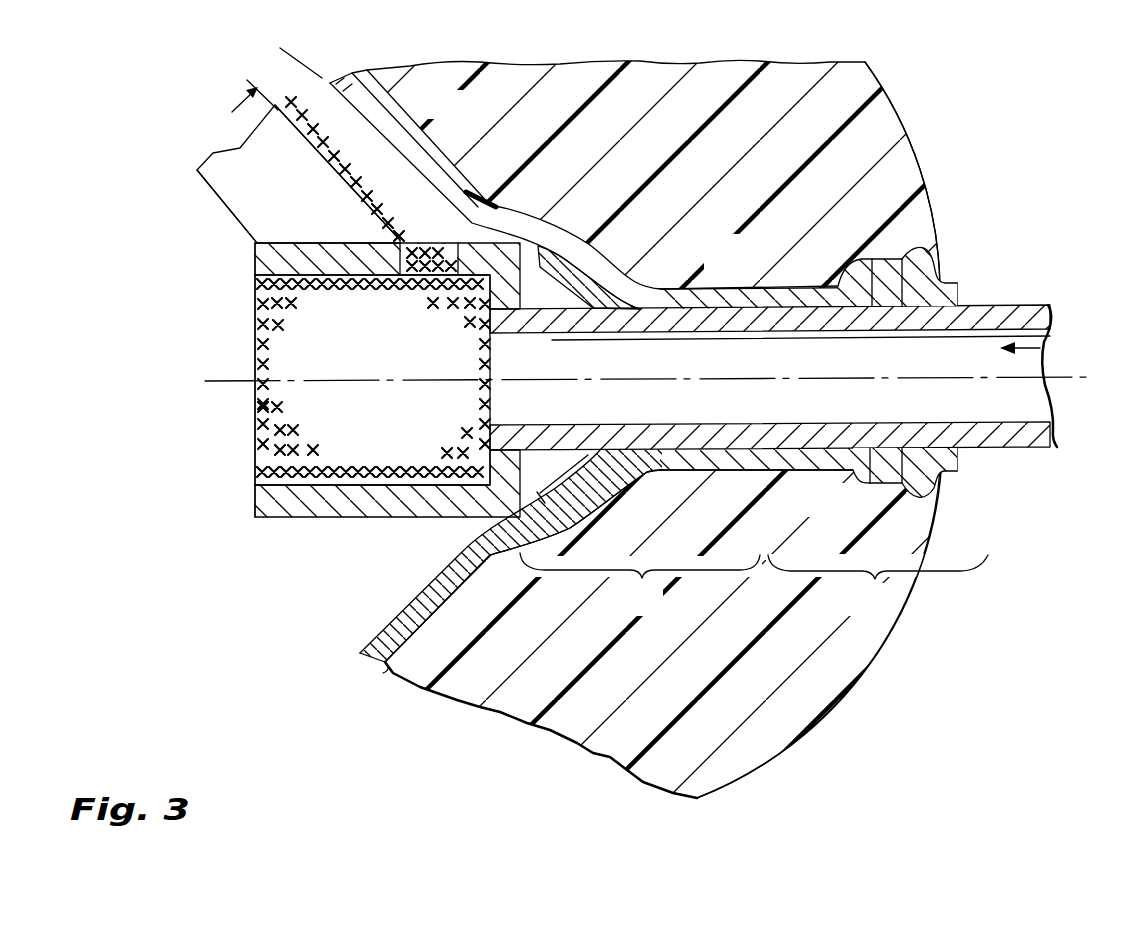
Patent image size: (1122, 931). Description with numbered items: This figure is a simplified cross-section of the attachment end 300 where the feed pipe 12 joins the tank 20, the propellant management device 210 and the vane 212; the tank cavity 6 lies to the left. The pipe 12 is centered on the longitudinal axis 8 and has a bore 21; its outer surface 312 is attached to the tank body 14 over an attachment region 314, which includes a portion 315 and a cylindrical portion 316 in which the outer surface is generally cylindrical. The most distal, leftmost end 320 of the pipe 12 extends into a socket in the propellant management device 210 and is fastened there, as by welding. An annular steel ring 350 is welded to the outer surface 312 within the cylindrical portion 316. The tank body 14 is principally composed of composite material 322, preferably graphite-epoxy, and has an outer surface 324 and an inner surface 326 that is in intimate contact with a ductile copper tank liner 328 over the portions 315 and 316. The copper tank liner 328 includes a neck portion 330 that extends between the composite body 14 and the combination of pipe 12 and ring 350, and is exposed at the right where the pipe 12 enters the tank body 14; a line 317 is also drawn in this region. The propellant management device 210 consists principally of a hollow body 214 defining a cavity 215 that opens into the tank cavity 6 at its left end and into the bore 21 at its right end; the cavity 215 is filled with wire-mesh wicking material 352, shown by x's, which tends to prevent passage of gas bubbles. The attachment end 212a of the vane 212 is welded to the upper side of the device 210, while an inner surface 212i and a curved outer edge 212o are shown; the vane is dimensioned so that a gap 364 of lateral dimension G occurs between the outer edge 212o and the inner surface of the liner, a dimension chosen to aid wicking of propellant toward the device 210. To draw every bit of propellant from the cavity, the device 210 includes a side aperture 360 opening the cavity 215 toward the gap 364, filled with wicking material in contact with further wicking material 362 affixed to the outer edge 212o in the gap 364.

The tank cavity 6 is at (250, 584).
The longitudinal axis 8 is at (1074, 378).
The pipe 12 is at (1056, 450).
The tank body 14 is at (897, 118).
The tank 20 is at (991, 197).
The bore 21 is at (1045, 348).
The propellant management device 210 is at (253, 266).
The vane 212 is at (248, 232).
The fitting wall inner surface 212i is at (216, 196).
The curved outer edge of vane 212o is at (358, 192).
The attachment end of vane 212a is at (332, 241).
The hollow body 214 is at (335, 522).
The cavity 215 is at (426, 421).
The attachment end 300 is at (1032, 216).
The outer surface of pipe 312 is at (1000, 450).
The attachment region 314 is at (985, 810).
The portion of attachment region 315 is at (640, 586).
The cylindrical portion 316 is at (878, 587).
The interface line 317 is at (830, 475).
The distal end of pipe 320 is at (493, 335).
The composite material 322 is at (909, 162).
The outer surface of tank body 324 is at (884, 82).
The inner surface of tank body 326 is at (386, 86).
The copper tank liner 328 is at (436, 150).
The neck portion 330 is at (732, 287).
The annular steel ring 350 is at (902, 257).
The wicking material 352 is at (279, 330).
The side aperture 360 is at (457, 259).
The further wicking material 362 is at (340, 160).
The gap 364 is at (295, 87).
The lateral dimension of gap G is at (288, 52).